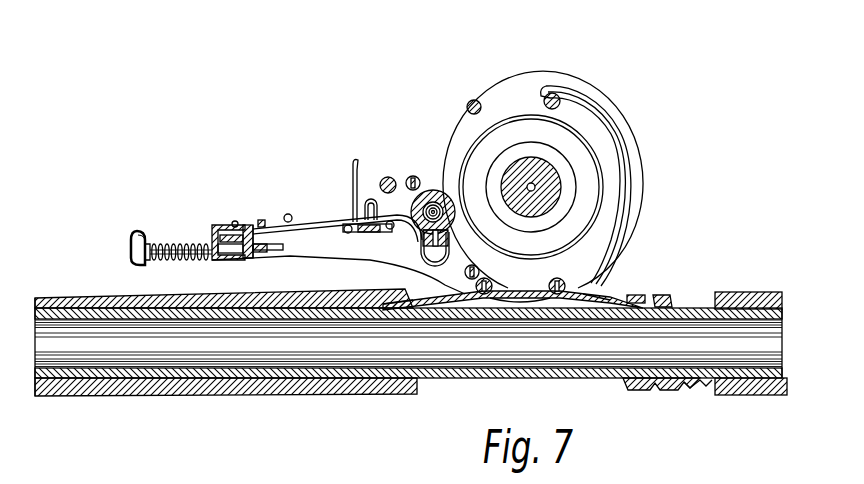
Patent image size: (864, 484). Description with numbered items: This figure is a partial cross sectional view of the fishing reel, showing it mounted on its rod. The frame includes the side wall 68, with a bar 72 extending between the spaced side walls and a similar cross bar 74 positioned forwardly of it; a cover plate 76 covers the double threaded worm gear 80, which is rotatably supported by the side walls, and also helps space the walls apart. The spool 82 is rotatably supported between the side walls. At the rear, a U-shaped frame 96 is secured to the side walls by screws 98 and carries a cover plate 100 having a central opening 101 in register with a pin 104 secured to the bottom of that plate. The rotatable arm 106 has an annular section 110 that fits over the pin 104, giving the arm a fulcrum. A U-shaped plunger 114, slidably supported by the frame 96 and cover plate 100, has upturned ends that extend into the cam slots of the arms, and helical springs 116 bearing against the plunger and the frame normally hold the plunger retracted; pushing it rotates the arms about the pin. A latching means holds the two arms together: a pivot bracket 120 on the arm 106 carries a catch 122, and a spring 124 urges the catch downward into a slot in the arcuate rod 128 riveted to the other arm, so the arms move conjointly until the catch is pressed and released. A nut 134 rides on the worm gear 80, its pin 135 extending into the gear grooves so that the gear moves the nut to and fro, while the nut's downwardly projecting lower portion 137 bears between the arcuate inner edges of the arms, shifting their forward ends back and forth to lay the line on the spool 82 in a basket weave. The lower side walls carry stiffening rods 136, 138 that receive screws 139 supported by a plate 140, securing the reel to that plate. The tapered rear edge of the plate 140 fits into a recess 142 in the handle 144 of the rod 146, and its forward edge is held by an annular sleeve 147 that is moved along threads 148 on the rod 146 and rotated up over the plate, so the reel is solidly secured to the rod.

The side wall 68 is at (533, 80).
The bar 72 is at (474, 100).
The cross bar 74 is at (580, 95).
The cover plate 76 is at (443, 200).
The double threaded worm gear 80 is at (434, 204).
The spool 82 is at (540, 185).
The U-shaped frame 96 is at (318, 222).
The screws 98 is at (412, 176).
The cover plate 100 is at (225, 225).
The central opening 101 is at (240, 225).
The pin 104 is at (250, 225).
The rotatable arm 106 is at (608, 129).
The annular section 110 is at (235, 260).
The U-shaped plunger 114 is at (266, 221).
The helical springs 116 is at (172, 249).
The pivot bracket 120 is at (352, 238).
The catch 122 is at (355, 185).
The spring 124 is at (364, 195).
The arcuate rod 128 is at (365, 235).
The nut 134 is at (456, 215).
The pin 135 is at (448, 228).
The stiffening rod 136 is at (485, 300).
The lower portion 137 is at (420, 255).
The stiffening rod 138 is at (575, 292).
The screws 139 is at (557, 300).
The plate 140 is at (597, 304).
The recess 142 is at (420, 302).
The handle 144 is at (283, 397).
The rod 146 is at (750, 376).
The annular sleeve 147 is at (660, 388).
The threads 148 is at (695, 386).